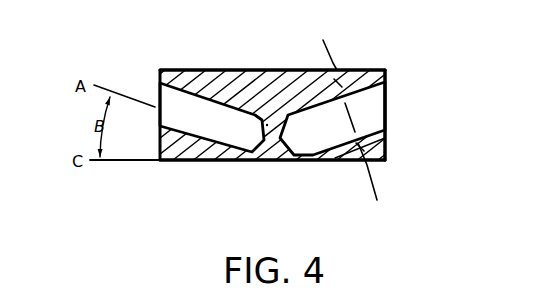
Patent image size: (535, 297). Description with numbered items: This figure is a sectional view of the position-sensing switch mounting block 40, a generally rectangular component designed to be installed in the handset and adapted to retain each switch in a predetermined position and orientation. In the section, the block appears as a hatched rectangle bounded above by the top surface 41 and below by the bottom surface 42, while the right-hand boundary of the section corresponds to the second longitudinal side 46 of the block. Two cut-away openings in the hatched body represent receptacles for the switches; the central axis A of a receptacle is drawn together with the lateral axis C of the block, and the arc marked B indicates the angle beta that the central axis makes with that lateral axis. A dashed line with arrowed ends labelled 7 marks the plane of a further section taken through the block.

The position-sensing switch mounting block 40 is at (365, 68).
The top surface 41 is at (192, 60).
The bottom surface 42 is at (215, 179).
The second longitudinal side 46 is at (404, 118).
The section line 7- 7 is at (323, 40).